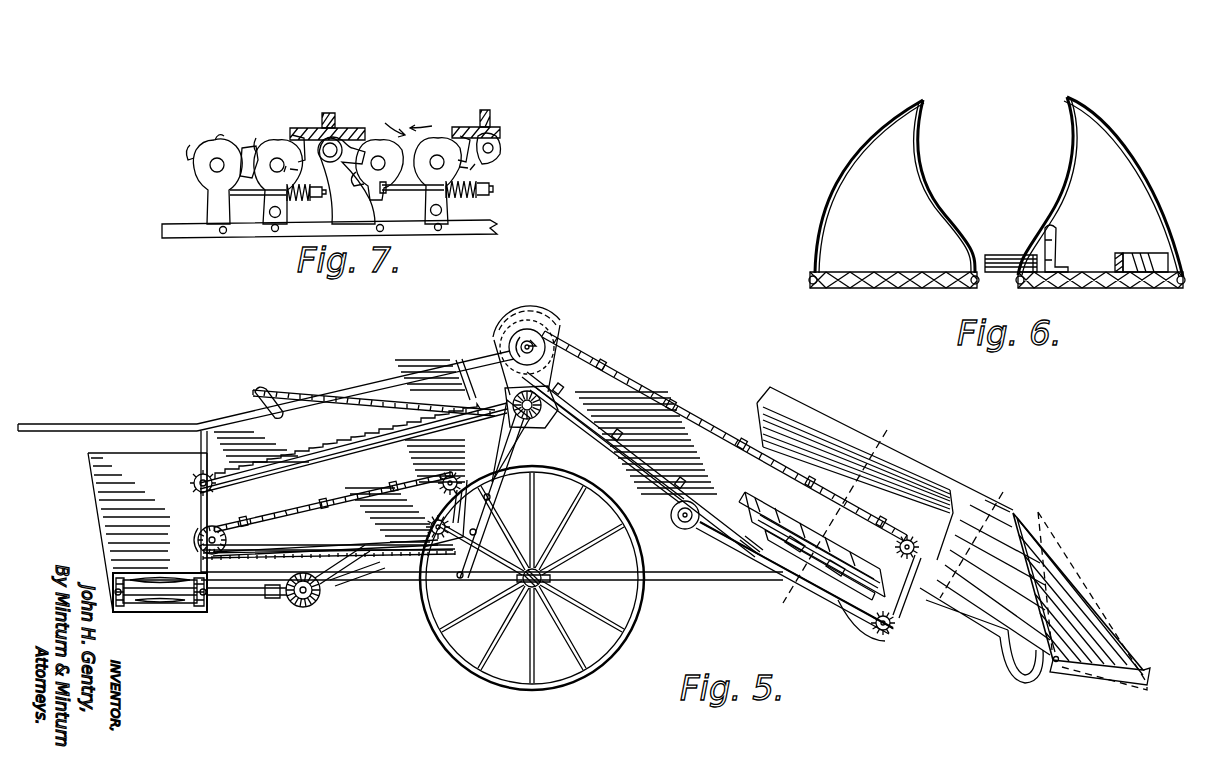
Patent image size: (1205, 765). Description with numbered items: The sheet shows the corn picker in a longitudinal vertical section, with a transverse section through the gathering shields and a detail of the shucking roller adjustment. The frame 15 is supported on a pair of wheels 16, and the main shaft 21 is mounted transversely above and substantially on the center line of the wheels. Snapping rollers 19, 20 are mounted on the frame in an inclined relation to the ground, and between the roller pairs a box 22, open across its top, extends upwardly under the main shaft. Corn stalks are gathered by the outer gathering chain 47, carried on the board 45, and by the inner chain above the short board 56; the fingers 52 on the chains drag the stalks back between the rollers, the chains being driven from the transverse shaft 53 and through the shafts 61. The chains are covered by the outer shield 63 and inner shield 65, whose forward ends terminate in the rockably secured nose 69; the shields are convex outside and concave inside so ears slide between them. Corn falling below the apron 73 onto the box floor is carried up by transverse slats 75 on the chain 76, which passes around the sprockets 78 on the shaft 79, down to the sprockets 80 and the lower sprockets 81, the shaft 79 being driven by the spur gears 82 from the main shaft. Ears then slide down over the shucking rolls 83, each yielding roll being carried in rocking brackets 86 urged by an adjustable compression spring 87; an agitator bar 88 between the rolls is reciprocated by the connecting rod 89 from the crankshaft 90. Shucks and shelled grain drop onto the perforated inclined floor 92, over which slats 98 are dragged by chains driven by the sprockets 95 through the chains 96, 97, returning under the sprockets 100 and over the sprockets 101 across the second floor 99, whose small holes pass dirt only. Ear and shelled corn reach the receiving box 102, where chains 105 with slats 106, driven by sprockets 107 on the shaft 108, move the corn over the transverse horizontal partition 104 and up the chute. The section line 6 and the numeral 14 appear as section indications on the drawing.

In FIG. 5, the section line 6- 6 is at (991, 487).
In FIG. 5, the chute bottom 14 is at (838, 576).
In FIG. 5, the frame 15 is at (500, 462).
In FIG. 5, the wheels 16 is at (628, 633).
In FIG. 5, the snapping roller 19 is at (818, 532).
In FIG. 5, the snapping roller 20 is at (800, 524).
In FIG. 5, the main shaft 21 is at (538, 428).
In FIG. 5, the box 22 is at (637, 403).
In FIG. 6, the board 45 is at (1103, 289).
In FIG. 6, the outer gathering chain 47 is at (1118, 252).
In FIG. 6, the fingers 52 is at (1008, 257).
In FIG. 5, the transverse shaft 53 is at (685, 529).
In FIG. 6, the short board 56 is at (902, 264).
In FIG. 5, the shafts 61 is at (727, 538).
In FIG. 6, the outer shield 63 is at (1062, 170).
In FIG. 6, the inner shield 65 is at (826, 192).
In FIG. 5, the inner shield 65 is at (955, 495).
In FIG. 5, the nose 69 is at (1068, 553).
In FIG. 5, the apron 73 is at (705, 543).
In FIG. 5, the transverse slats 75 is at (672, 398).
In FIG. 5, the chain 76 is at (566, 376).
In FIG. 5, the sprockets 78 is at (556, 335).
In FIG. 5, the shaft 79 is at (538, 362).
In FIG. 5, the sprockets 80 is at (898, 542).
In FIG. 5, the lower sprockets 81 is at (887, 610).
In FIG. 5, the spur gears 82 is at (540, 320).
In FIG. 7, the shucking rolls 83 is at (226, 142).
In FIG. 5, the shucking rolls 83 is at (310, 462).
In FIG. 7, the rocking brackets 86 is at (280, 167).
In FIG. 7, the adjustable compression spring 87 is at (302, 201).
In FIG. 7, the agitator bar 88 is at (328, 113).
In FIG. 5, the agitator bar 88 is at (305, 462).
In FIG. 5, the connecting rod 89 is at (313, 417).
In FIG. 5, the crankshaft 90 is at (248, 400).
In FIG. 5, the inclined floor 92 is at (280, 513).
In FIG. 5, the sprockets 95 is at (452, 475).
In FIG. 5, the chain 96 is at (345, 585).
In FIG. 5, the chain 97 is at (322, 600).
In FIG. 5, the slats 98 is at (325, 495).
In FIG. 5, the second floor 99 is at (405, 560).
In FIG. 5, the sprockets 100 is at (432, 520).
In FIG. 5, the sprockets 101 is at (226, 538).
In FIG. 5, the receiving box 102 is at (165, 538).
In FIG. 5, the transverse horizontal partition 104 is at (170, 605).
In FIG. 5, the chains 105 is at (120, 614).
In FIG. 5, the slats 106 is at (155, 620).
In FIG. 5, the sprockets 107 is at (112, 588).
In FIG. 5, the shaft 108 is at (270, 600).